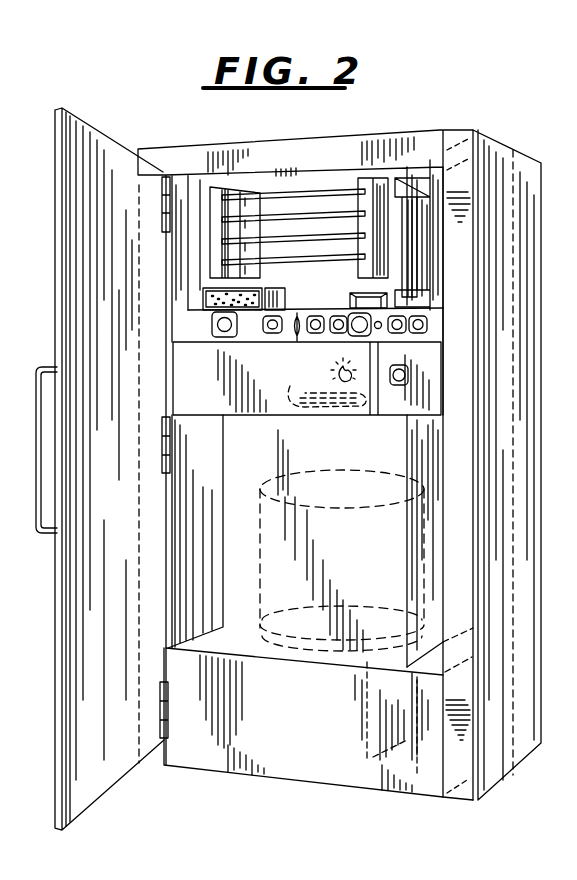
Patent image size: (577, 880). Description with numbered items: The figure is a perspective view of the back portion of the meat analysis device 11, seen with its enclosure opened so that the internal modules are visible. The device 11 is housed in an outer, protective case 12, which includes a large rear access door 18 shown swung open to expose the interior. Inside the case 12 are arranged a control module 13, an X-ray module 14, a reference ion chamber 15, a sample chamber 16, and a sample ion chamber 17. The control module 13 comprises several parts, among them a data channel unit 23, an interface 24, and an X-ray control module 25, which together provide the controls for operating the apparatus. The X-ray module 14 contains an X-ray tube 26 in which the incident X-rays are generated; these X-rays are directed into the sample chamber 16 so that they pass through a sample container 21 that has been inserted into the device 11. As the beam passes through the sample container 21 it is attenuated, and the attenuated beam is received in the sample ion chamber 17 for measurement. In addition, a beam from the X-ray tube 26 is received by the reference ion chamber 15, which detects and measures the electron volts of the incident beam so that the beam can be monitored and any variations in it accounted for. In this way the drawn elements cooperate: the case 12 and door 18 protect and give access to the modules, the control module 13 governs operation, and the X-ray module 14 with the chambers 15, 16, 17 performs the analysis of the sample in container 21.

The meat analysis device 11 is at (348, 135).
The outer protective case 12 is at (508, 574).
The control module 13 is at (207, 203).
The X-ray module 14 is at (182, 393).
The reference ion chamber 15 is at (455, 385).
The sample chamber 16 is at (233, 433).
The sample ion chamber 17 is at (300, 742).
The rear access door 18 is at (128, 211).
The sample container 21 is at (317, 472).
The data channel unit 23 is at (268, 203).
The interface 24 is at (268, 257).
The X-ray control module 25 is at (420, 228).
The X-ray tube 26 is at (318, 382).